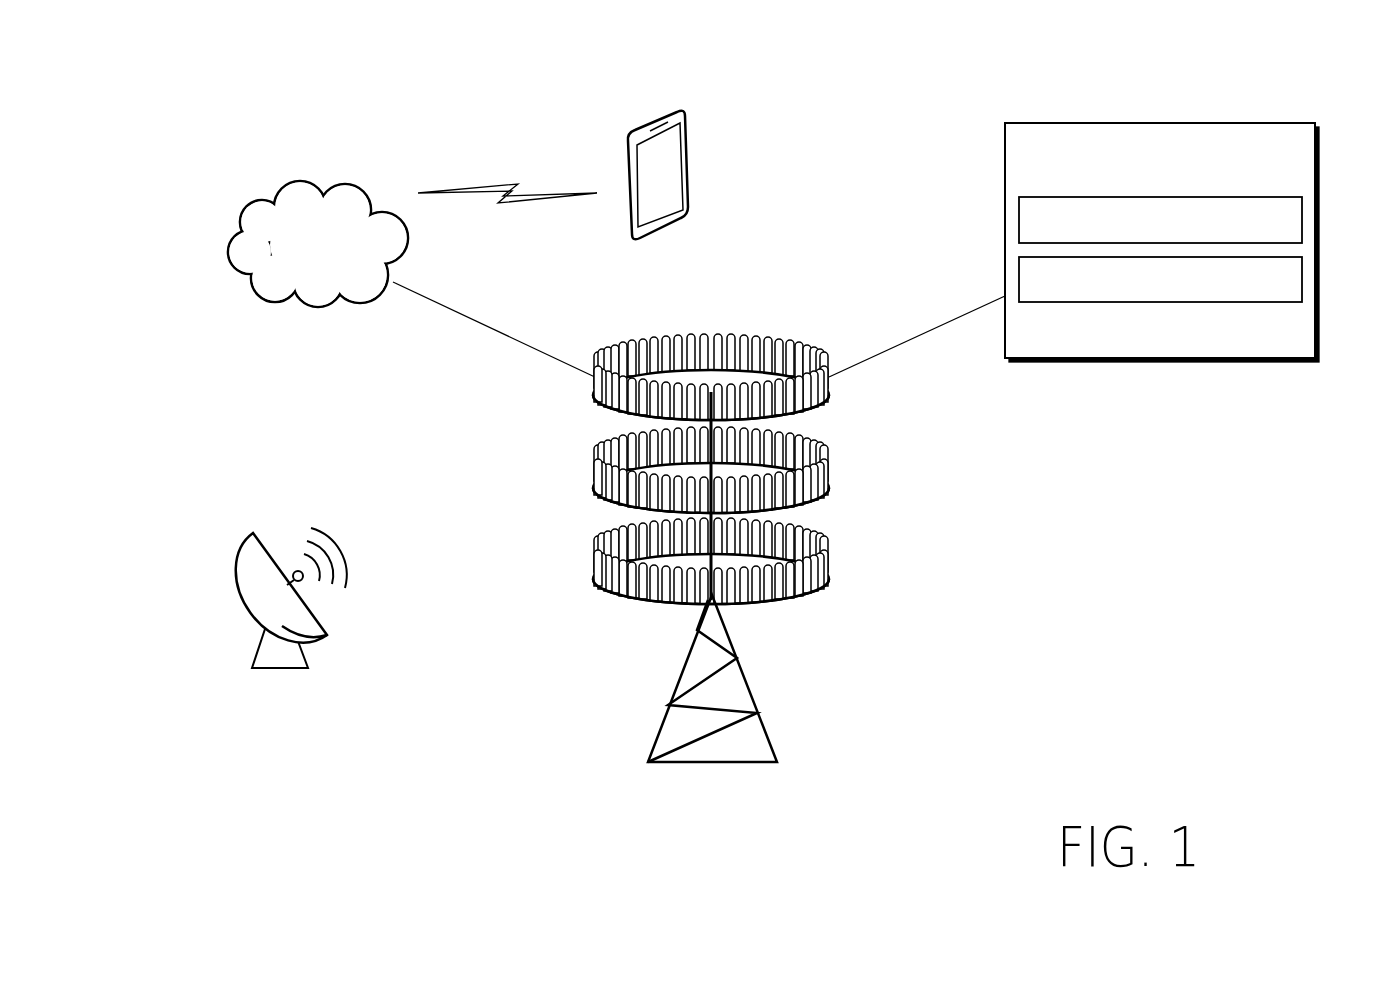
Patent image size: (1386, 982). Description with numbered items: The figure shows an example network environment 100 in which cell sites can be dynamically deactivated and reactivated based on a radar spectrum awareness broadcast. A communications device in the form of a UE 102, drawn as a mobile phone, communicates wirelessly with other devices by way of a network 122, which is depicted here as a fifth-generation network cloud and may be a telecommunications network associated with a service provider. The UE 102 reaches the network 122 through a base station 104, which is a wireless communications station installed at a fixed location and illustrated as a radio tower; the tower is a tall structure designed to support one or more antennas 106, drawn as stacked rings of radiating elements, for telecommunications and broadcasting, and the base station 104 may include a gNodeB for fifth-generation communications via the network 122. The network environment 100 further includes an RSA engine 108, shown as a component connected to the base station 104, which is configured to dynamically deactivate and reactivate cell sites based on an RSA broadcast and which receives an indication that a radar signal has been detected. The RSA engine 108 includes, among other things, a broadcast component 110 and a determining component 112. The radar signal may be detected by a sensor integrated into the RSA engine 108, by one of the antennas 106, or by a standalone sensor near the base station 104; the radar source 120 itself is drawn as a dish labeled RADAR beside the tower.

The network environment 100 is at (132, 122).
The UE 102 is at (660, 118).
The base station 104 is at (753, 683).
The antennas 106 is at (790, 340).
The RSA engine 108 is at (1183, 230).
The broadcast component 110 is at (1302, 220).
The determining component 112 is at (1302, 280).
The radar 120 is at (270, 672).
The network 122 is at (297, 183).